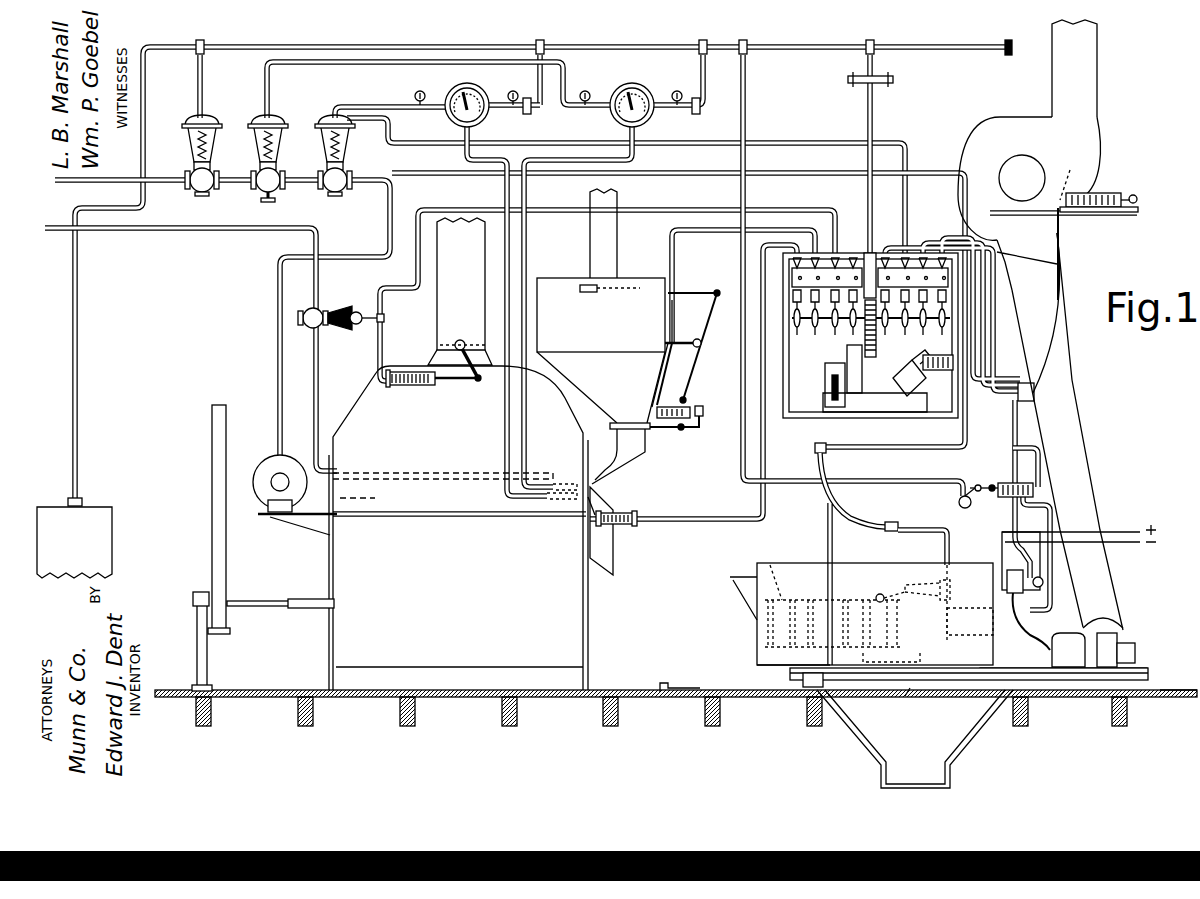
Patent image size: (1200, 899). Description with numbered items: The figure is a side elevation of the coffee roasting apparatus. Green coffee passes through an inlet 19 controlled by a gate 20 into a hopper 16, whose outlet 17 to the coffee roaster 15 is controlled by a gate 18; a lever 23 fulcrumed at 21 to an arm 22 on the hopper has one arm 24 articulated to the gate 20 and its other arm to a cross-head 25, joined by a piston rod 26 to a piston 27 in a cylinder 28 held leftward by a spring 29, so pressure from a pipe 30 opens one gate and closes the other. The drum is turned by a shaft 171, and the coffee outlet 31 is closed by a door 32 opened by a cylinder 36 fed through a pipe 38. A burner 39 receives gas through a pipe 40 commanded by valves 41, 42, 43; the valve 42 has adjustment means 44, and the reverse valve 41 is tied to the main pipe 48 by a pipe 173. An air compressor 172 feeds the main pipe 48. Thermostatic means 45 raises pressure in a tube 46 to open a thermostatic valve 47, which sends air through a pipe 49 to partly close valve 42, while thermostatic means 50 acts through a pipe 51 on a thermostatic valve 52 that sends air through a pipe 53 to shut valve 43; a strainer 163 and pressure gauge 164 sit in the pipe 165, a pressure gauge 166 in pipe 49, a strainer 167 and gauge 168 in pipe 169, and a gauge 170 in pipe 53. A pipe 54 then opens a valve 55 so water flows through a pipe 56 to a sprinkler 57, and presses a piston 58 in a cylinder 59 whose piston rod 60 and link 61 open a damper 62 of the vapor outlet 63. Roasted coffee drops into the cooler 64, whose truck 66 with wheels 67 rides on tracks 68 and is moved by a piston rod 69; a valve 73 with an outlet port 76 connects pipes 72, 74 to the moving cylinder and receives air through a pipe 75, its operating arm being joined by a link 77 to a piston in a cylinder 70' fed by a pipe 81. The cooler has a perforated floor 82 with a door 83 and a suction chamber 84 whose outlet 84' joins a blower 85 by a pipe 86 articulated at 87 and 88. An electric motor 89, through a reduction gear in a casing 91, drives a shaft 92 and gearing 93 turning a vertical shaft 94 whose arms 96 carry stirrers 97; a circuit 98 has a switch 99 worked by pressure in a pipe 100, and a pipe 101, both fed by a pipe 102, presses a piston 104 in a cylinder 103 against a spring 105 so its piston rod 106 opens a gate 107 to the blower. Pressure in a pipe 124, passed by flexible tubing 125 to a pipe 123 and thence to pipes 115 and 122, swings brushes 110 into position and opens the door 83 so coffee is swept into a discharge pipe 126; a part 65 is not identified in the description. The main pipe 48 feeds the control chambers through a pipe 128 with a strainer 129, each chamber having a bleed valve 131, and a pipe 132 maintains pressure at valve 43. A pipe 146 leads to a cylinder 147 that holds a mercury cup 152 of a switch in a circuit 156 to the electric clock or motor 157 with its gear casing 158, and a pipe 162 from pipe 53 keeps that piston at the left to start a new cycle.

The coffee roaster 15 is at (332, 655).
The hopper 16 is at (548, 282).
The outlet 17 is at (638, 458).
The gate 18 is at (650, 428).
The inlet 19 is at (620, 202).
The gate 20 is at (638, 283).
The fulcrum 21 is at (702, 344).
The arm 22 is at (674, 335).
The lever 23 is at (710, 312).
The arm 24 is at (692, 290).
The cross-head 25 is at (703, 427).
The piston rod 26 is at (704, 405).
The piston 27 is at (652, 400).
The cylinder 28 is at (658, 395).
The spring 29 is at (675, 407).
The pipe 30 is at (700, 230).
The coffee outlet 31 is at (613, 572).
The door 32 is at (580, 530).
The cylinder 36 is at (620, 511).
The pipe 38 is at (676, 522).
The burner 39 is at (323, 495).
The pipe 40 is at (278, 352).
The valve 41 is at (196, 192).
The valve 42 is at (262, 192).
The valve 43 is at (342, 192).
The adjustment means 44 is at (275, 201).
The thermostatic means 45 is at (562, 482).
The tube 46 is at (529, 432).
The thermostatic valve 47 is at (645, 118).
The main pipe 48 is at (646, 46).
The pipe 49 is at (310, 62).
The thermostatic means 50 is at (545, 517).
The pipe 51 is at (505, 193).
The thermostatic valve 52 is at (486, 93).
The pipe 53 is at (360, 107).
The pipe 54 is at (392, 288).
The valve 55 is at (322, 309).
The pipe 56 is at (318, 396).
The sprinkler 57 is at (364, 472).
The piston 58 is at (396, 368).
The cylinder 59 is at (412, 386).
The piston rod 60 is at (460, 380).
The link 61 is at (478, 352).
The damper 62 is at (458, 340).
The vapor outlet 63 is at (460, 291).
The cooler 64 is at (790, 563).
The funnel 65 is at (733, 603).
The truck 66 is at (1148, 672).
The wheels 67 is at (812, 698).
The tracks 68 is at (683, 682).
The piston rod 69 is at (875, 688).
The cylinder 70' is at (1042, 493).
The pipe 72 is at (920, 482).
The valve 73 is at (960, 506).
The pipe 74 is at (1040, 505).
The pipe 75 is at (746, 130).
The outlet port 76 is at (975, 485).
The link 77 is at (992, 484).
The pipe 81 is at (1040, 462).
The perforated floor 82 is at (757, 658).
The door or gate 83 is at (910, 650).
The suction chamber 84 is at (676, 706).
The outlet 84' is at (1168, 706).
The blower 85 is at (1100, 140).
The pipe 86 is at (1088, 425).
The articulation 87 is at (1125, 626).
The articulation 88 is at (1062, 240).
The electric motor 89 is at (1068, 668).
The casing 91 is at (1135, 645).
The shaft 92 is at (988, 682).
The gearing 93 is at (907, 701).
The vertical shaft 94 is at (880, 593).
The arms 96 is at (767, 570).
The stirrers 97 is at (768, 625).
The circuit 98 is at (1013, 594).
The switch 99 is at (1040, 587).
The pipe 100 is at (1017, 445).
The pipe 101 is at (1058, 345).
The pipe 102 is at (993, 380).
The cylinder 103 is at (1110, 190).
The piston 104 is at (1071, 228).
The spring 105 is at (1092, 213).
The piston rod 106 is at (1136, 194).
The gate 107 is at (997, 208).
The brushes 110 is at (970, 621).
The pipe 115 is at (952, 553).
The pipe 122 is at (1000, 532).
The pipe 123 is at (893, 531).
The pipe 124 is at (895, 448).
The flexible tubing 125 is at (816, 452).
The discharge pipe 126 is at (868, 758).
The pipe 128 is at (876, 104).
The strainer 129 is at (849, 84).
The bleed valve 131 is at (837, 266).
The pipe 132 is at (906, 153).
The pipe 146 is at (952, 312).
The cylinder 147 is at (945, 370).
The cup 152 is at (925, 390).
The circuit 156 is at (892, 372).
The electric clock or motor 157 is at (825, 395).
The gear casing 158 is at (847, 352).
The pipe 162 is at (790, 173).
The strainer 163 is at (700, 113).
The pressure gauge 164 is at (677, 90).
The pipe 165 is at (706, 92).
The pressure gauge 166 is at (587, 90).
The strainer 167 is at (530, 113).
The pressure gauge 168 is at (511, 104).
The pipe 169 is at (546, 52).
The pressure gauge 170 is at (421, 90).
The shaft 171 is at (296, 600).
The air compressor 172 is at (112, 531).
The pipe 173 is at (205, 98).